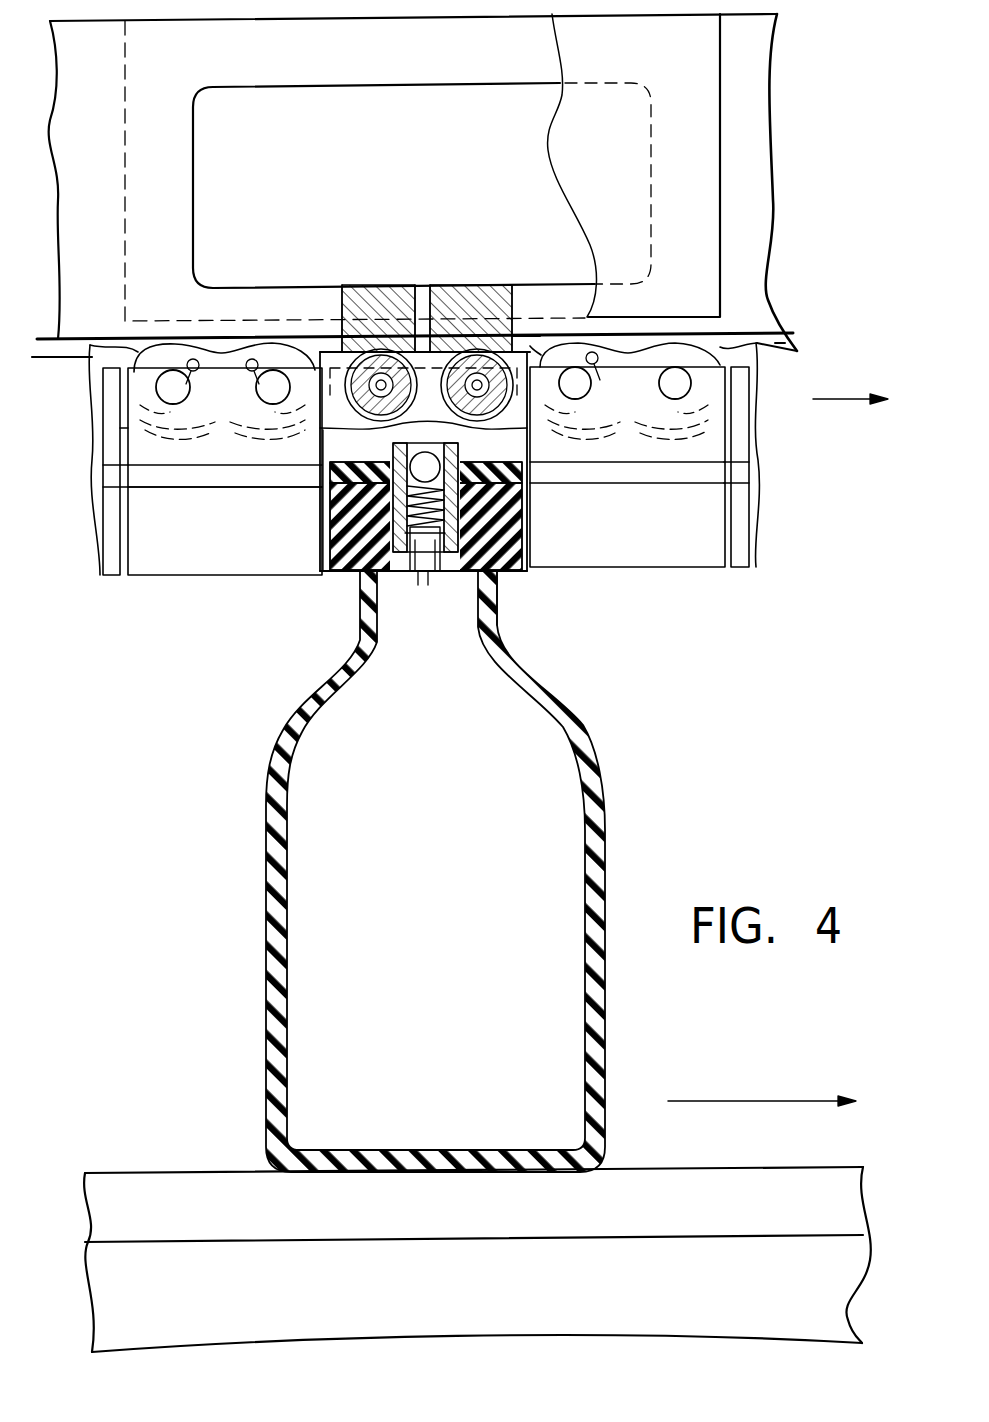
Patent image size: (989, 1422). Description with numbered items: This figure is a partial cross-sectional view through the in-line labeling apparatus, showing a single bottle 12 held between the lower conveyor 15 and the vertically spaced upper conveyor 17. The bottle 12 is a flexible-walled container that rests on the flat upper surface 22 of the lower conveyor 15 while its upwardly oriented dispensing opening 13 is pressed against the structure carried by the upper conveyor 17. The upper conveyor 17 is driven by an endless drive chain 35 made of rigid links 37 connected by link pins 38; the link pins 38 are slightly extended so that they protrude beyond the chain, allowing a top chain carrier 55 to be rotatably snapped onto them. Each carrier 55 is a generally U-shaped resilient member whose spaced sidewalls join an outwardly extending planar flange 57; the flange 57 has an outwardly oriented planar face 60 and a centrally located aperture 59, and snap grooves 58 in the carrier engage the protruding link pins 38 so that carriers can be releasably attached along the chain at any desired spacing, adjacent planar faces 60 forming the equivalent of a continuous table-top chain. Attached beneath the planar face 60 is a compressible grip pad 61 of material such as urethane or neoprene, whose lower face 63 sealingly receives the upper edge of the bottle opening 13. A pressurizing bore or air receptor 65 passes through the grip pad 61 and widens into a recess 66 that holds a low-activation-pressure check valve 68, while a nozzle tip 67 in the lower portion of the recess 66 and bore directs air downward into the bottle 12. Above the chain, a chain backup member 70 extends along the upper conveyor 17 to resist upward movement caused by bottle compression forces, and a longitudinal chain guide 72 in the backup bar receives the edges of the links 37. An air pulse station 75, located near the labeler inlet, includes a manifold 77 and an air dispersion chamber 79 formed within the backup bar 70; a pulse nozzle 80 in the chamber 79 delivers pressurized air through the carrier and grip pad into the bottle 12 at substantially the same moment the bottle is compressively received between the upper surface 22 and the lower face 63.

The bottle 12 is at (546, 696).
The opening 13 is at (323, 563).
The lower conveyor 15 is at (120, 1128).
The upper conveyor 17 is at (795, 474).
The upper surface 22 is at (193, 1172).
The drive chain 35 is at (778, 422).
The links 37 is at (100, 430).
The link pins 38 is at (162, 392).
The top chain carrier 55 is at (312, 470).
The flange 57 is at (243, 474).
The snap grooves 58 is at (614, 382).
The aperture 59 is at (522, 492).
The planar face 60 is at (178, 489).
The grip pad 61 is at (690, 542).
The lower face 63 is at (500, 580).
The air receptor 65 is at (428, 573).
The recess 66 is at (523, 537).
The nozzle tip 67 is at (420, 573).
The check valve 68 is at (386, 502).
The chain backup member 70 is at (752, 200).
The chain guide 72 is at (785, 343).
The air pulse station 75 is at (108, 314).
The manifold 77 is at (698, 135).
The air dispersion chamber 79 is at (422, 185).
The pulse nozzle 80 is at (425, 282).